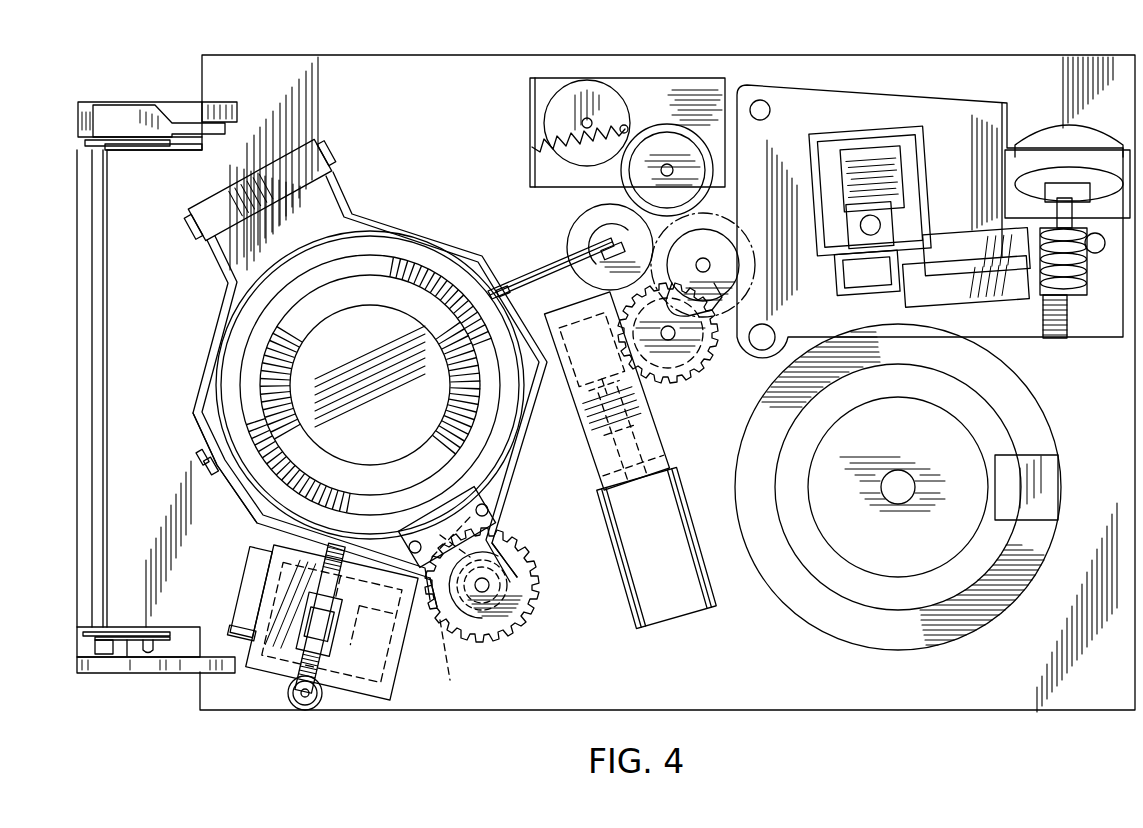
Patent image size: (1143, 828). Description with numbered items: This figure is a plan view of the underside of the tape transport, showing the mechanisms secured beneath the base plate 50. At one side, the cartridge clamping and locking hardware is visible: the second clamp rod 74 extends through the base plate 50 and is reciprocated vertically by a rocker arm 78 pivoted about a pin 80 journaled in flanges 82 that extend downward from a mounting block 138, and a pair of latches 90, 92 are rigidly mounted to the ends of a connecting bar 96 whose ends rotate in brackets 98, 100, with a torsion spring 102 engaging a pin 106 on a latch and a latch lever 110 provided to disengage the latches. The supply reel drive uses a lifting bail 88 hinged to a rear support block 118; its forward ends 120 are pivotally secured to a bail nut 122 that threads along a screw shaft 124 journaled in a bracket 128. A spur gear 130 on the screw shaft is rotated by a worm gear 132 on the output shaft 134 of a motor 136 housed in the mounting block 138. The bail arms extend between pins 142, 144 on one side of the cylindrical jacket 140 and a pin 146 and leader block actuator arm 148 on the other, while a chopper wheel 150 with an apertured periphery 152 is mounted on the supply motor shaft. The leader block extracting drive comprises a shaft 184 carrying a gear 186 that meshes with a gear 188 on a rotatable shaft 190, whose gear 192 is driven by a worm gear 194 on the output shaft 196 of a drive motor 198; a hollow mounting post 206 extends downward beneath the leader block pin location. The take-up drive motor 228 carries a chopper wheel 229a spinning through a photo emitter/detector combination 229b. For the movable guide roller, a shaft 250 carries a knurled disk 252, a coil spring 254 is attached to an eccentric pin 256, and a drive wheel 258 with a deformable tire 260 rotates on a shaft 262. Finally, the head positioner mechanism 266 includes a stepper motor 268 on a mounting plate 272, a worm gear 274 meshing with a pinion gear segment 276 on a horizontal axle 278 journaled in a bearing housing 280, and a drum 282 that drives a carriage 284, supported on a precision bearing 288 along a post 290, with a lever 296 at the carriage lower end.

The base plate 50 is at (869, 700).
The second clamp rod 74 is at (322, 703).
The rocker arm 78 is at (325, 665).
The pin 80 is at (346, 626).
The flanges 82 is at (325, 596).
The lifting bail 88 is at (410, 232).
The latch 90 is at (123, 632).
The latch 92 is at (120, 146).
The connecting bar 96 is at (103, 355).
The bracket 98 is at (163, 667).
The bracket 100 is at (185, 105).
The torsion spring 102 is at (127, 656).
The pin 106 is at (153, 648).
The latch lever 110 is at (142, 112).
The rear support block 118 is at (291, 160).
The forward ends of the lifting bail 120 is at (503, 537).
The bail nut 122 is at (480, 532).
The screw shaft 124 is at (487, 590).
The bracket 128 is at (457, 500).
The spur gear 130 is at (533, 588).
The worm gear 132 is at (450, 687).
The output shaft 134 is at (358, 638).
The motor 136 is at (240, 595).
The mounting block 138 is at (263, 653).
The cylindrical jacket 140 is at (250, 495).
The pin 142 is at (215, 470).
The pin 144 is at (205, 458).
The pin 146 is at (510, 294).
The leader block actuator arm 148 is at (547, 268).
The chopper wheel 150 is at (382, 425).
The circumferential periphery 152 is at (387, 307).
The shaft 184 is at (708, 260).
The gear 186 is at (738, 298).
The gear 188 is at (620, 326).
The rotatable shaft 190 is at (674, 337).
The gear 192 is at (703, 373).
The worm gear 194 is at (573, 377).
The output shaft 196 is at (593, 447).
The drive motor 198 is at (673, 490).
The mounting post 206 is at (593, 227).
The take-up drive motor 228 is at (992, 606).
The chopper wheel 229a is at (998, 430).
The photo emitter/detector combination 229b is at (1043, 465).
The shaft 250 is at (583, 123).
The knurled disk 252 is at (600, 100).
The coil spring 254 is at (547, 157).
The eccentric pin 256 is at (624, 126).
The drive wheel 258 is at (708, 163).
The deformable outer tire 260 is at (708, 141).
The shaft 262 is at (667, 176).
The magnetic head positioner mechanism 266 is at (922, 92).
The stepper motor 268 is at (1100, 127).
The mounting plate 272 is at (993, 103).
The worm gear 274 is at (1072, 275).
The pinion gear segment 276 is at (1060, 337).
The horizontal axle 278 is at (895, 268).
The bearing housing 280 is at (952, 293).
The drum 282 is at (857, 293).
The carriage 284 is at (917, 167).
The precision bearing 288 is at (885, 223).
The post 290 is at (878, 215).
The lever 296 is at (870, 155).